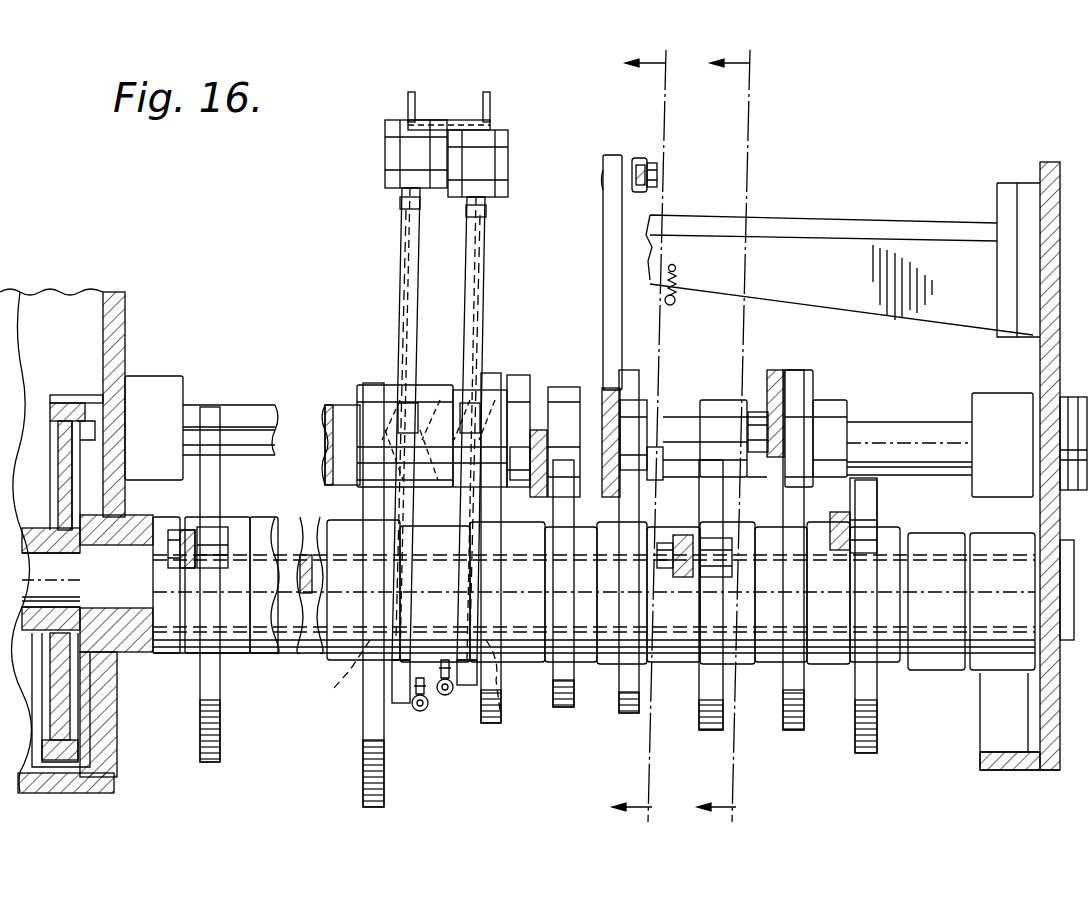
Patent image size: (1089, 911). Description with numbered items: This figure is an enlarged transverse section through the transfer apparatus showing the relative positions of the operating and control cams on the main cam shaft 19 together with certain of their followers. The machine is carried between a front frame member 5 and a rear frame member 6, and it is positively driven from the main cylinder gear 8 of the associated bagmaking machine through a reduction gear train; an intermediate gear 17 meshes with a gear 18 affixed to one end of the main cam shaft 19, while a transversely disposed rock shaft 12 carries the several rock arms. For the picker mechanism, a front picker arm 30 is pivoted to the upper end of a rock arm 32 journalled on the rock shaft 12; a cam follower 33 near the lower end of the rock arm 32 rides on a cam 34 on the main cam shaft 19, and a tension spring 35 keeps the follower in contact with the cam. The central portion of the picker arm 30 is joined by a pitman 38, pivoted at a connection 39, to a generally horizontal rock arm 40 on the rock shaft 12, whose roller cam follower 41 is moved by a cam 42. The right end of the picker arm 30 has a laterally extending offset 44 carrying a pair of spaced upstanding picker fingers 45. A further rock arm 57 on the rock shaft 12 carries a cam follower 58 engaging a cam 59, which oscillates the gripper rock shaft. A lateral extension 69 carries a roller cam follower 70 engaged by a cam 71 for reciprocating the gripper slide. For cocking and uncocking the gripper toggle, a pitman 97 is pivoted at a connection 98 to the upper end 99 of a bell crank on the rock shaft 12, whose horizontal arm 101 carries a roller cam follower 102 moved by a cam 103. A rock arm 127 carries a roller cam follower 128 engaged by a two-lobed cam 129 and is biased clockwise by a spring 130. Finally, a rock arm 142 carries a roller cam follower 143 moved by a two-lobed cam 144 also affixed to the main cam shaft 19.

The front frame member 5 is at (1054, 162).
The rear frame member 6 is at (110, 296).
The main cylinder gear 8 is at (650, 429).
The rock shaft 12 is at (302, 404).
The intermediate gear 17 is at (743, 429).
The gear 18 is at (60, 396).
The main cam shaft 19 is at (307, 554).
The front picker arm 30 is at (387, 135).
The rock arm 32 is at (404, 235).
The cam follower 33 is at (503, 730).
The cam 34 is at (365, 756).
The tension spring 35 is at (428, 707).
The pitman 38 is at (404, 268).
The pivotal connection 39 is at (456, 379).
The rock arm 40 is at (531, 375).
The roller cam follower 41 is at (575, 390).
The cam 42 is at (560, 710).
The laterally extending offset 44 is at (456, 120).
The picker fingers 45 is at (409, 92).
The rock arm 57 is at (786, 370).
The cam follower 58 is at (810, 371).
The cam 59 is at (792, 732).
The lateral extension 69 is at (851, 505).
The roller cam follower 70 is at (871, 527).
The cam 71 is at (866, 754).
The pitman 97 is at (658, 178).
The pivotal connection 98 is at (637, 158).
The upper end of bell crank 99 is at (604, 249).
The arm 101 is at (608, 380).
The roller cam follower 102 is at (626, 396).
The cam 103 is at (628, 716).
The rock arm 127 is at (683, 540).
The roller cam follower 128 is at (714, 538).
The cam 129 is at (714, 730).
The spring 130 is at (672, 305).
The rock arm 142 is at (182, 530).
The roller cam follower 143 is at (218, 528).
The two-lobed cam 144 is at (200, 730).